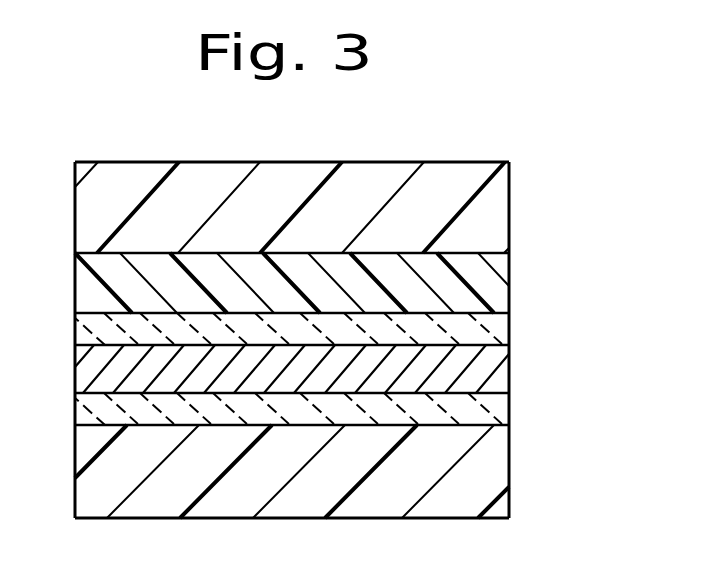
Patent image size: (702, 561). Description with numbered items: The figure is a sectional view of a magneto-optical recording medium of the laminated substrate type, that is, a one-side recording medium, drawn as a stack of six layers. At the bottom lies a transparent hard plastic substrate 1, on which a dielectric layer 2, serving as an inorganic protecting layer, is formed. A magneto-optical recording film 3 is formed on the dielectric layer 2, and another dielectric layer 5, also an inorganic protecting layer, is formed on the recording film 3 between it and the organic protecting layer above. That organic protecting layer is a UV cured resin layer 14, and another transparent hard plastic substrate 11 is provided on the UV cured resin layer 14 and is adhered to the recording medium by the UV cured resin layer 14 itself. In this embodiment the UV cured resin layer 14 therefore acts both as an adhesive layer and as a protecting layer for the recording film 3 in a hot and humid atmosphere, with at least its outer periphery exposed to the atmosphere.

The transparent hard plastic substrate 11 is at (507, 204).
The UV cured resin layer 14 is at (496, 282).
The dielectric layer 5 is at (502, 333).
The magneto-optical recording film 3 is at (503, 376).
The dielectric layer 2 is at (502, 408).
The transparent hard plastic substrate 1 is at (502, 464).